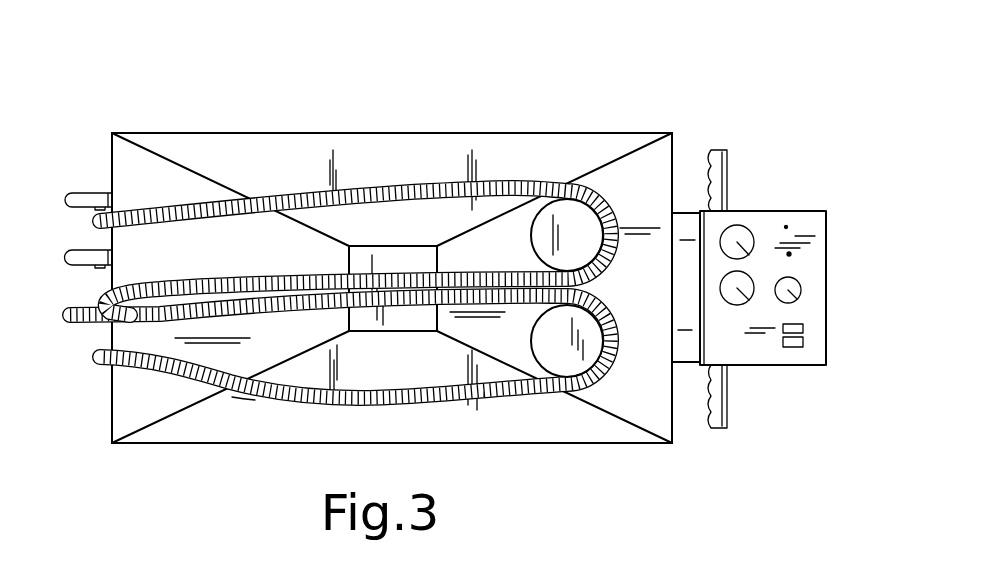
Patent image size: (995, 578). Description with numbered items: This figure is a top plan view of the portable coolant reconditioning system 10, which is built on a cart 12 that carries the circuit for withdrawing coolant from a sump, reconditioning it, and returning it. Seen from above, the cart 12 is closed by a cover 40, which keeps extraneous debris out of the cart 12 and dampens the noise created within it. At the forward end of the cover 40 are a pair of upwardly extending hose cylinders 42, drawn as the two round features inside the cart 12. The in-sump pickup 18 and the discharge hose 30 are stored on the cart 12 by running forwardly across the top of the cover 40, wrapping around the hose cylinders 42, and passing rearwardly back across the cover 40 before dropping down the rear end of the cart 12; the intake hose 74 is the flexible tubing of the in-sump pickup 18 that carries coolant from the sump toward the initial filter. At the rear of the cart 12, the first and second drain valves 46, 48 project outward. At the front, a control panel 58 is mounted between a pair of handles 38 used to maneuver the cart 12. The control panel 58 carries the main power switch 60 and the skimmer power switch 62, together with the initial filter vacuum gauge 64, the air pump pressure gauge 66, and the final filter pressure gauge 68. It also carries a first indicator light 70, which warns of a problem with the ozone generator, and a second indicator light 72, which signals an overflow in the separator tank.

The portable coolant reconditioning system 10 is at (188, 97).
The cart 12 is at (590, 137).
The in-sump pickup 18 is at (273, 400).
The discharge hose 30 is at (295, 186).
The handles 38 is at (727, 162).
The cover 40 is at (627, 435).
The hose cylinders 42 is at (528, 230).
The first drain valve 46 is at (78, 193).
The second drain valve 48 is at (78, 250).
The control panel 58 is at (786, 211).
The main power switch 60 is at (803, 343).
The skimmer power switch 62 is at (803, 328).
The initial filter vacuum gauge 64 is at (801, 287).
The air pump pressure gauge 66 is at (738, 225).
The final filter pressure gauge 68 is at (740, 305).
The first indicator light 70 is at (792, 254).
The second indicator light 72 is at (786, 227).
The intake hose 74 is at (243, 392).